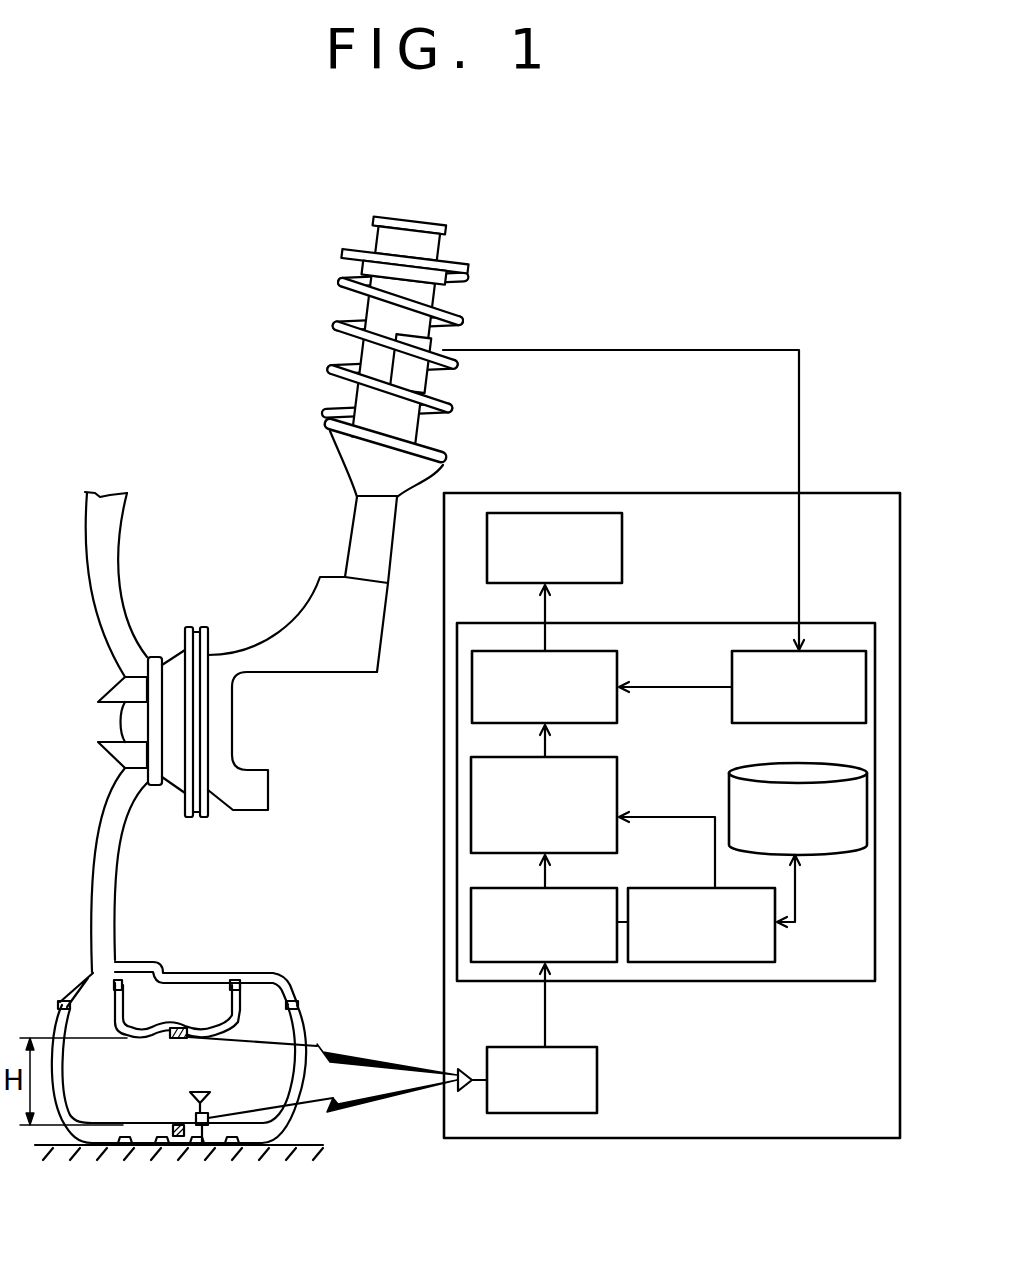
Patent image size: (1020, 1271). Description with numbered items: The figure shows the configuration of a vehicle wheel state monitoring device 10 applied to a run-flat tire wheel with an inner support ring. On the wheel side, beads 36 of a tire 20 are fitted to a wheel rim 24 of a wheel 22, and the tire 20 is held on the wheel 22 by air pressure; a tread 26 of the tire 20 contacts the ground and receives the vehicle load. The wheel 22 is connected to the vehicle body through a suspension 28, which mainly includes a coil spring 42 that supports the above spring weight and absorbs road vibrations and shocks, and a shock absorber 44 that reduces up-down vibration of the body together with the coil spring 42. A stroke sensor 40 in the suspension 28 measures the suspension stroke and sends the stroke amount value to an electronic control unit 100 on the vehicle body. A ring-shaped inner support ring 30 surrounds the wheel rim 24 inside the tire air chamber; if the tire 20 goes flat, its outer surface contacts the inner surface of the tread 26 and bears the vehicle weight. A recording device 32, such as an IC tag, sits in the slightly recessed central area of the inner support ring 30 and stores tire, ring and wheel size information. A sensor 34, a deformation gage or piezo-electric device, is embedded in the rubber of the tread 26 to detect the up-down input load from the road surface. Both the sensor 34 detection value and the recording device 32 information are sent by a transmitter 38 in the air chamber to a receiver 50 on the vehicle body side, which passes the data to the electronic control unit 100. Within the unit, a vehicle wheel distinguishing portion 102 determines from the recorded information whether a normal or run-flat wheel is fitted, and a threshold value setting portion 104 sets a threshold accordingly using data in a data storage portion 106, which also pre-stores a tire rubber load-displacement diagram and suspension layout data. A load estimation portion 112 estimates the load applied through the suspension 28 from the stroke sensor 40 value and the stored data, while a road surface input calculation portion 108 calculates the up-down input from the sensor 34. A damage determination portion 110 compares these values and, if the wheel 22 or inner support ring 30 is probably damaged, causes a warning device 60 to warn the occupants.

The vehicle wheel state monitoring device 10 is at (703, 220).
The tire 20 is at (287, 1030).
The wheel 22 is at (105, 876).
The wheel rim 24 is at (62, 997).
The tread 26 is at (150, 1133).
The suspension 28 is at (283, 402).
The inner support ring 30 is at (122, 1010).
The recording device 32 is at (186, 1038).
The sensor 34 is at (176, 1125).
The beads 36 is at (270, 992).
The transmitter 38 is at (202, 1136).
The stroke sensor 40 is at (407, 375).
The coil spring 42 is at (443, 427).
The shock absorber 44 is at (357, 528).
The receiver 50 is at (597, 1080).
The warning device 60 is at (622, 550).
The electronic control unit (ECU) 100 is at (767, 600).
The vehicle wheel distinguishing portion 102 is at (585, 887).
The threshold value setting portion 104 is at (777, 945).
The data storage portion 106 is at (826, 857).
The road surface input calculation portion 108 is at (618, 780).
The damage determination portion 110 is at (618, 673).
The load estimation portion 112 is at (730, 703).